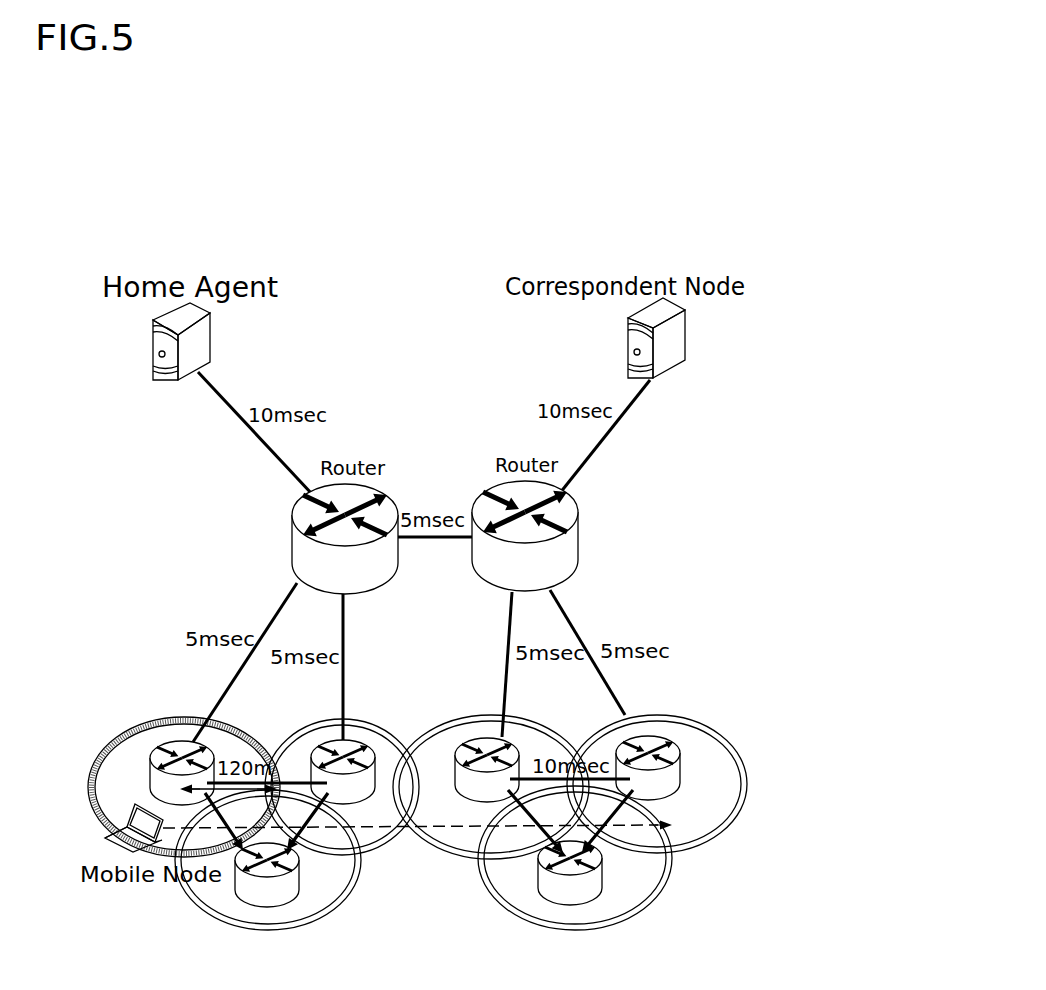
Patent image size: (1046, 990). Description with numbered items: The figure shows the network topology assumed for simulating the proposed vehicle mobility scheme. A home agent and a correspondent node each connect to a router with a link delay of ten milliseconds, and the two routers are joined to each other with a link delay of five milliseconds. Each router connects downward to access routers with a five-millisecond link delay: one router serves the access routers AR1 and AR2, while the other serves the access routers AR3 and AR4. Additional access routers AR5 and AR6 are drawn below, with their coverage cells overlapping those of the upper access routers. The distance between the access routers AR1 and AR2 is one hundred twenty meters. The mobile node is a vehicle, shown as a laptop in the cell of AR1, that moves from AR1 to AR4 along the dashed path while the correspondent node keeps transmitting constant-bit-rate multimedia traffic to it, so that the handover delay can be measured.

The access router AR1 is at (184, 776).
The access router AR2 is at (342, 775).
The access router AR3 is at (491, 776).
The access router AR4 is at (657, 773).
The access router AR5 is at (268, 875).
The access router AR6 is at (575, 873).